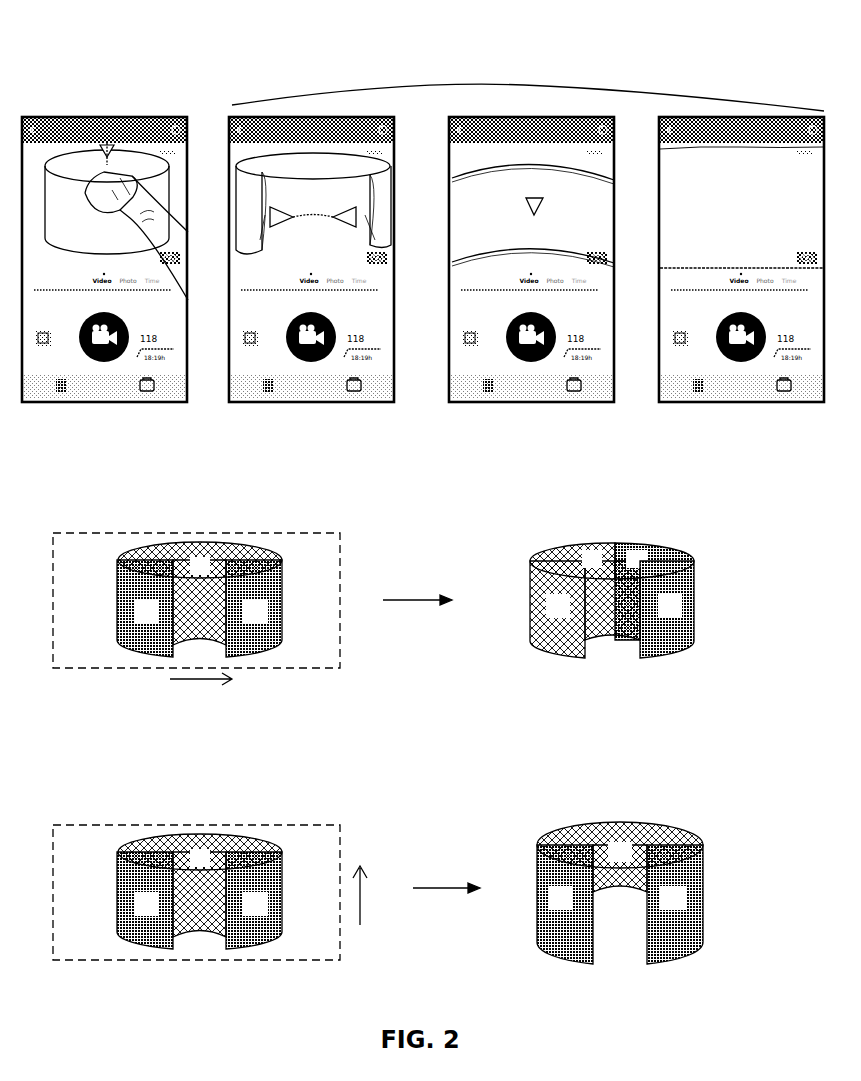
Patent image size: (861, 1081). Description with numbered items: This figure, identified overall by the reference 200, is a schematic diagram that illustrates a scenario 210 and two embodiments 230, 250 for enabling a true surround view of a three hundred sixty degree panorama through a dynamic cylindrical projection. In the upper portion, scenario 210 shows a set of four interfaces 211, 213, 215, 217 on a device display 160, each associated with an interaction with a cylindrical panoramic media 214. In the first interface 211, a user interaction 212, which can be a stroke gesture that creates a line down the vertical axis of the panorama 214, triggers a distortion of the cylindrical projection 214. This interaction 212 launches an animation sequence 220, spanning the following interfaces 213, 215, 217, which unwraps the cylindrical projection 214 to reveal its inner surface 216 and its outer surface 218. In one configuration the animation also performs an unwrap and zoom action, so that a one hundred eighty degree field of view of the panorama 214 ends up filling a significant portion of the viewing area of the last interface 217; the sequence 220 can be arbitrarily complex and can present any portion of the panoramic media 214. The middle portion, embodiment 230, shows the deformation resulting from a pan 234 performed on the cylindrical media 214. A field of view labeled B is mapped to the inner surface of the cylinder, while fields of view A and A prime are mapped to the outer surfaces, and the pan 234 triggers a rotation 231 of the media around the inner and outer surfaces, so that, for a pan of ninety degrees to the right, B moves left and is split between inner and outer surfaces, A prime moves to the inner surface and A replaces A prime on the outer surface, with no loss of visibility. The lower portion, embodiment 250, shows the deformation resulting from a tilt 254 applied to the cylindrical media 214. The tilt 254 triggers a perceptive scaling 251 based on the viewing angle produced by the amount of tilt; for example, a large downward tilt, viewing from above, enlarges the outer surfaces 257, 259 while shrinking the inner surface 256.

The process / operational flow 200 is at (740, 28).
The scenario 210 is at (128, 50).
The interface 211 is at (88, 115).
The user interaction 212 is at (100, 248).
The interface 213 is at (311, 271).
The cylindrical panoramic media 214 is at (40, 220).
The interface 215 is at (531, 271).
The inner surface 216 is at (313, 203).
The interface 217 is at (741, 271).
The outer surface 218 is at (376, 226).
The animation sequence 220 is at (524, 85).
The display of user device 160 is at (741, 167).
The embodiment 230 is at (172, 497).
The rotation 231 is at (417, 578).
The pan 234 is at (205, 685).
The embodiment 250 is at (172, 757).
The scaling 251 is at (446, 869).
The tilt 254 is at (360, 910).
The inner surface 256 is at (262, 850).
The outer surface 257 is at (128, 930).
The outer surface 259 is at (270, 928).